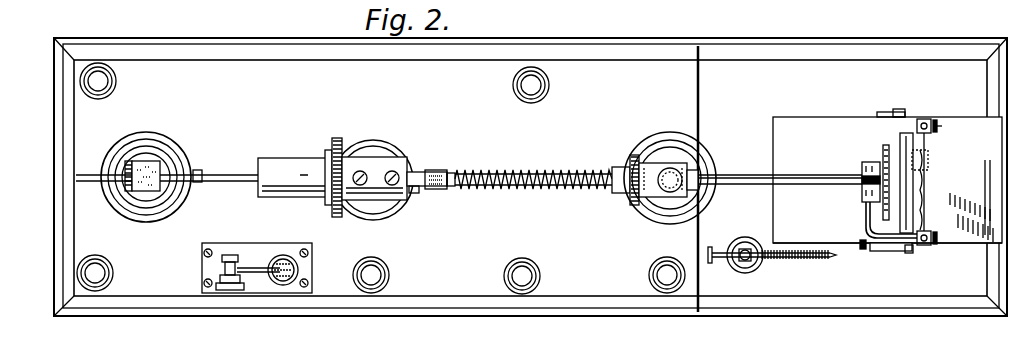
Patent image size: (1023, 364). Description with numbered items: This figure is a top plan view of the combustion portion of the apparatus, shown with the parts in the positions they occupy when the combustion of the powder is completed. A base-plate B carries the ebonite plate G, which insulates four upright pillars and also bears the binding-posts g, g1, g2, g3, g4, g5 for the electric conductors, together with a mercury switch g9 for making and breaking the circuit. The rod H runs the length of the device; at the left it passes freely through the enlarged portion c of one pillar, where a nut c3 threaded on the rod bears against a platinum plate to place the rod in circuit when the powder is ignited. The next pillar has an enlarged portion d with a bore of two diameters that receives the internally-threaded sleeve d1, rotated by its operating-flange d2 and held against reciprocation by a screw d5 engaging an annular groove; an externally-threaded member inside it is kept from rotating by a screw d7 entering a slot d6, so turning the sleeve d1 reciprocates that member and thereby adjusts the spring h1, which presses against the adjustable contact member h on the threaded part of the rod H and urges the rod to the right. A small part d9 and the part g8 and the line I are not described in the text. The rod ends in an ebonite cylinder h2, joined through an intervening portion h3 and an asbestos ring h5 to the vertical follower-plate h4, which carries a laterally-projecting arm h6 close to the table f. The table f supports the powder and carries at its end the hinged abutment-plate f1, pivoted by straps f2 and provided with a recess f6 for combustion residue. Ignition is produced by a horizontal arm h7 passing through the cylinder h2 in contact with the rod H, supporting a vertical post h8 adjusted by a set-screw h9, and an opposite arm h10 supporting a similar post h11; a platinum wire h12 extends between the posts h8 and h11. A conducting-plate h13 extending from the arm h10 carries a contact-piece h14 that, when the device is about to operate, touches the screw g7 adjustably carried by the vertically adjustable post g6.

The base-plate B is at (577, 40).
The partition line I is at (701, 115).
The ebonite plate G is at (352, 154).
The rod H is at (784, 190).
The enlarged portion c is at (147, 166).
The nut c3 is at (198, 169).
The internally-threaded sleeve d1 is at (293, 160).
The operating-flange d2 is at (340, 138).
The enlarged portion d is at (380, 160).
The screw d5 is at (376, 173).
The screw d7 is at (418, 172).
The slot d6 is at (440, 172).
The stop d9 is at (419, 193).
The spring h1 is at (556, 168).
The adjustable contact member h is at (614, 166).
The cylinder h2 is at (862, 165).
The intervening portion h3 is at (890, 165).
The follower-plate h4 is at (928, 172).
The ring of asbestos h5 is at (902, 135).
The laterally-projecting arm h6 is at (910, 254).
The horizontal arm h7 is at (868, 130).
The vertical post h8 is at (925, 119).
The set-screw h9 is at (939, 128).
The arm h10 is at (878, 252).
The vertically-adjustable post h11 is at (926, 232).
The platinum wire h12 is at (926, 180).
The conducting-plate h13 is at (866, 232).
The contact-piece h14 is at (863, 250).
The table f is at (887, 219).
The abutment-plate f1 is at (995, 197).
The straps f2 is at (880, 111).
The recess f6 is at (950, 205).
The binding-post g is at (100, 268).
The binding-post g1 is at (383, 268).
The binding-post g2 is at (532, 265).
The binding-post g3 is at (664, 258).
The binding-post g4 is at (104, 93).
The binding-post g5 is at (540, 96).
The vertical post g6 is at (738, 272).
The screw g7 is at (784, 259).
The spool wheel g8 is at (670, 165).
The mercury switch g9 is at (236, 262).